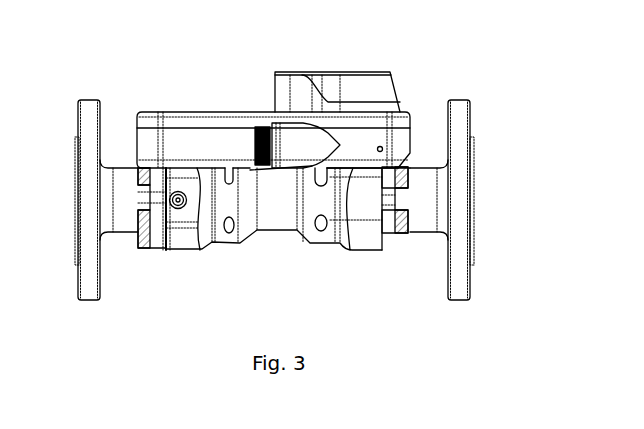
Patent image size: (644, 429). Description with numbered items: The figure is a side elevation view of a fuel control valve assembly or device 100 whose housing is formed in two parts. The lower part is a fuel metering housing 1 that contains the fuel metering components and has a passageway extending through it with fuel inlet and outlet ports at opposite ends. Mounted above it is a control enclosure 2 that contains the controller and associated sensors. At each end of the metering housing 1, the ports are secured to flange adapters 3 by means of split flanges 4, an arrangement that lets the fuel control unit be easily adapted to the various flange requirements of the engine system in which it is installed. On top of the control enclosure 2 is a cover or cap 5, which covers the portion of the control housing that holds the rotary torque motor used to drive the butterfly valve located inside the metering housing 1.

The fuel control valve assembly 100 is at (218, 72).
The fuel metering housing part 1 is at (280, 220).
The control enclosure 2 is at (195, 147).
The flange adapter 3 is at (90, 113).
The split flange 4 is at (392, 192).
The cap 5 is at (365, 90).